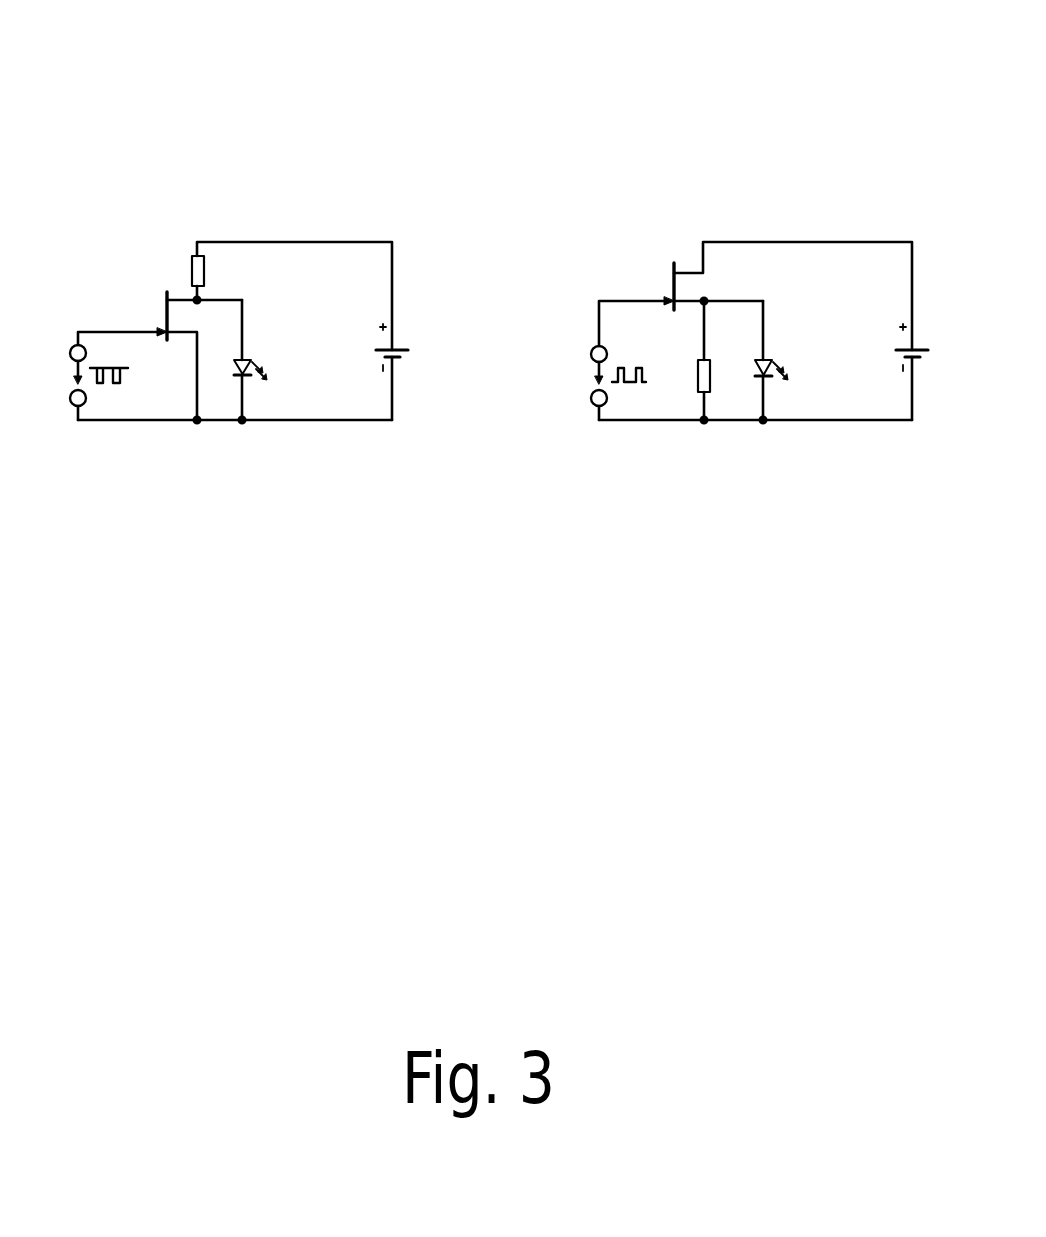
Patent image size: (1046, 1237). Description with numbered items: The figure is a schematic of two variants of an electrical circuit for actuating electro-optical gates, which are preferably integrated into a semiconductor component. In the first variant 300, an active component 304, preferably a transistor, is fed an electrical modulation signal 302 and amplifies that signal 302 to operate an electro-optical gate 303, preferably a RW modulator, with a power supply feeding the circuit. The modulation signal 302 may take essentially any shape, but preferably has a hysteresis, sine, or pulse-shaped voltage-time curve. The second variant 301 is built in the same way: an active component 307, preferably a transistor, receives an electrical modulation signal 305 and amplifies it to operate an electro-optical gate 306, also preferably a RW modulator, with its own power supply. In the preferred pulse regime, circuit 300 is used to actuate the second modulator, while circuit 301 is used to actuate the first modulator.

The variant 300 is at (292, 77).
The variant 301 is at (829, 77).
The electrical modulation signal 302 is at (107, 382).
The electro-optical gate 303 is at (245, 365).
The active component 304 is at (168, 302).
The electrical modulation signal 305 is at (627, 383).
The electro-optical gate 306 is at (768, 363).
The active component 307 is at (672, 292).